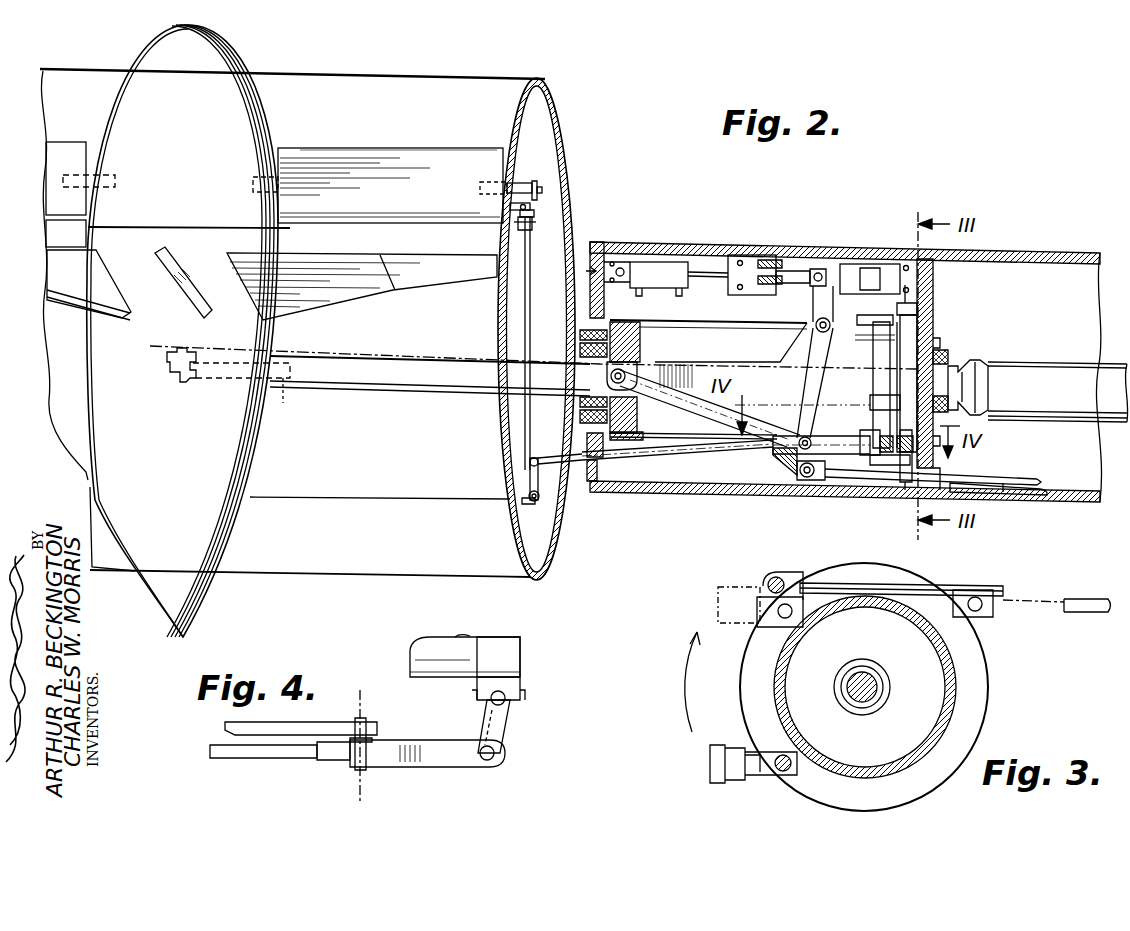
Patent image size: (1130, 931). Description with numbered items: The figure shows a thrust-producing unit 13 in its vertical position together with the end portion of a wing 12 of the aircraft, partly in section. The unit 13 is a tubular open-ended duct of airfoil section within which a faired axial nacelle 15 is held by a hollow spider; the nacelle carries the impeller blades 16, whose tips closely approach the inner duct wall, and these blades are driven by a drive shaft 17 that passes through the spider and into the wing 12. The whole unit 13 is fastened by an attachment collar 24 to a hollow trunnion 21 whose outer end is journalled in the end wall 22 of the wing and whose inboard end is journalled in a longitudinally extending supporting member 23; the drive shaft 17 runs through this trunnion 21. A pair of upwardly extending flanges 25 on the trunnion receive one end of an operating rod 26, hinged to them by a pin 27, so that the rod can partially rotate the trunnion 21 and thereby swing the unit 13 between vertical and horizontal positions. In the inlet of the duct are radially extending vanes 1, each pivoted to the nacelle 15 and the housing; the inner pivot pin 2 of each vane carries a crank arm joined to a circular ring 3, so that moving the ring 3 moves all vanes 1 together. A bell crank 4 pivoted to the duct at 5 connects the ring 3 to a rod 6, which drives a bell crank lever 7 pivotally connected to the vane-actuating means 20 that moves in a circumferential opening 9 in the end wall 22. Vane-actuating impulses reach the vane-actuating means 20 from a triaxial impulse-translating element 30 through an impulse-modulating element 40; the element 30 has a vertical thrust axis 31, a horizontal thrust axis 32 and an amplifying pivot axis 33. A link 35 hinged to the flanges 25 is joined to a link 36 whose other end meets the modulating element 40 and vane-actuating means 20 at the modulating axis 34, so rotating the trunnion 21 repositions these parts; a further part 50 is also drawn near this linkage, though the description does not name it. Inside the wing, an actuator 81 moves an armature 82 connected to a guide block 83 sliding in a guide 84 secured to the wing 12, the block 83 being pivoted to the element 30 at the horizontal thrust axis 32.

In FIG. 2, the vane 1 is at (410, 163).
In FIG. 2, the inner pivot pin 2 is at (538, 186).
In FIG. 2, the ring element 3 is at (510, 207).
In FIG. 2, the bell crank 4 is at (536, 212).
In FIG. 2, the pivot 5 is at (538, 226).
In FIG. 2, the rod 6 is at (531, 320).
In FIG. 2, the bell crank lever 7 is at (531, 477).
In FIG. 2, the circumferential opening 9 is at (560, 482).
In FIG. 2, the wing 12 is at (1036, 250).
In FIG. 2, the thrust-producing unit 13 is at (561, 109).
In FIG. 2, the axial nacelle 15 is at (232, 54).
In FIG. 2, the impeller blades 16 is at (160, 262).
In FIG. 2, the drive shaft 17 is at (278, 395).
In FIG. 3, the drive shaft 17 is at (880, 690).
In FIG. 2, the vane-actuating means 20 is at (660, 472).
In FIG. 4, the vane-actuating means 20 is at (240, 752).
In FIG. 2, the hollow trunnion 21 is at (712, 332).
In FIG. 3, the hollow trunnion 21 is at (950, 699).
In FIG. 4, the hollow trunnion 21 is at (430, 648).
In FIG. 2, the end wall 22 is at (592, 271).
In FIG. 2, the supporting member 23 is at (934, 274).
In FIG. 2, the attachment collar 24 is at (938, 335).
In FIG. 2, the flange 25 is at (872, 338).
In FIG. 3, the flange 25 is at (972, 655).
In FIG. 4, the flange 25 is at (462, 637).
In FIG. 2, the operating rod 26 is at (905, 300).
In FIG. 3, the operating rod 26 is at (890, 585).
In FIG. 3, the pin 27 is at (780, 578).
In FIG. 2, the triaxial impulse-translating element 30 is at (701, 352).
In FIG. 2, the vertical thrust axis 31 is at (806, 481).
In FIG. 2, the horizontal thrust axis 32 is at (837, 285).
In FIG. 2, the amplifying pivot axis 33 is at (626, 366).
In FIG. 2, the impulse-modulating axis 34 is at (804, 436).
In FIG. 4, the impulse-modulating axis 34 is at (360, 785).
In FIG. 2, the link 35 is at (868, 430).
In FIG. 3, the link 35 is at (718, 600).
In FIG. 4, the link 35 is at (500, 735).
In FIG. 2, the link 36 is at (842, 456).
In FIG. 3, the link 36 is at (733, 588).
In FIG. 4, the link 36 is at (443, 757).
In FIG. 2, the impulse-modulating element 40 is at (688, 430).
In FIG. 4, the impulse-modulating element 40 is at (228, 727).
In FIG. 2, the pin 50 is at (892, 480).
In FIG. 2, the actuator 81 is at (652, 260).
In FIG. 2, the armature 82 is at (708, 262).
In FIG. 2, the guide block 83 is at (850, 262).
In FIG. 2, the guide 84 is at (765, 254).